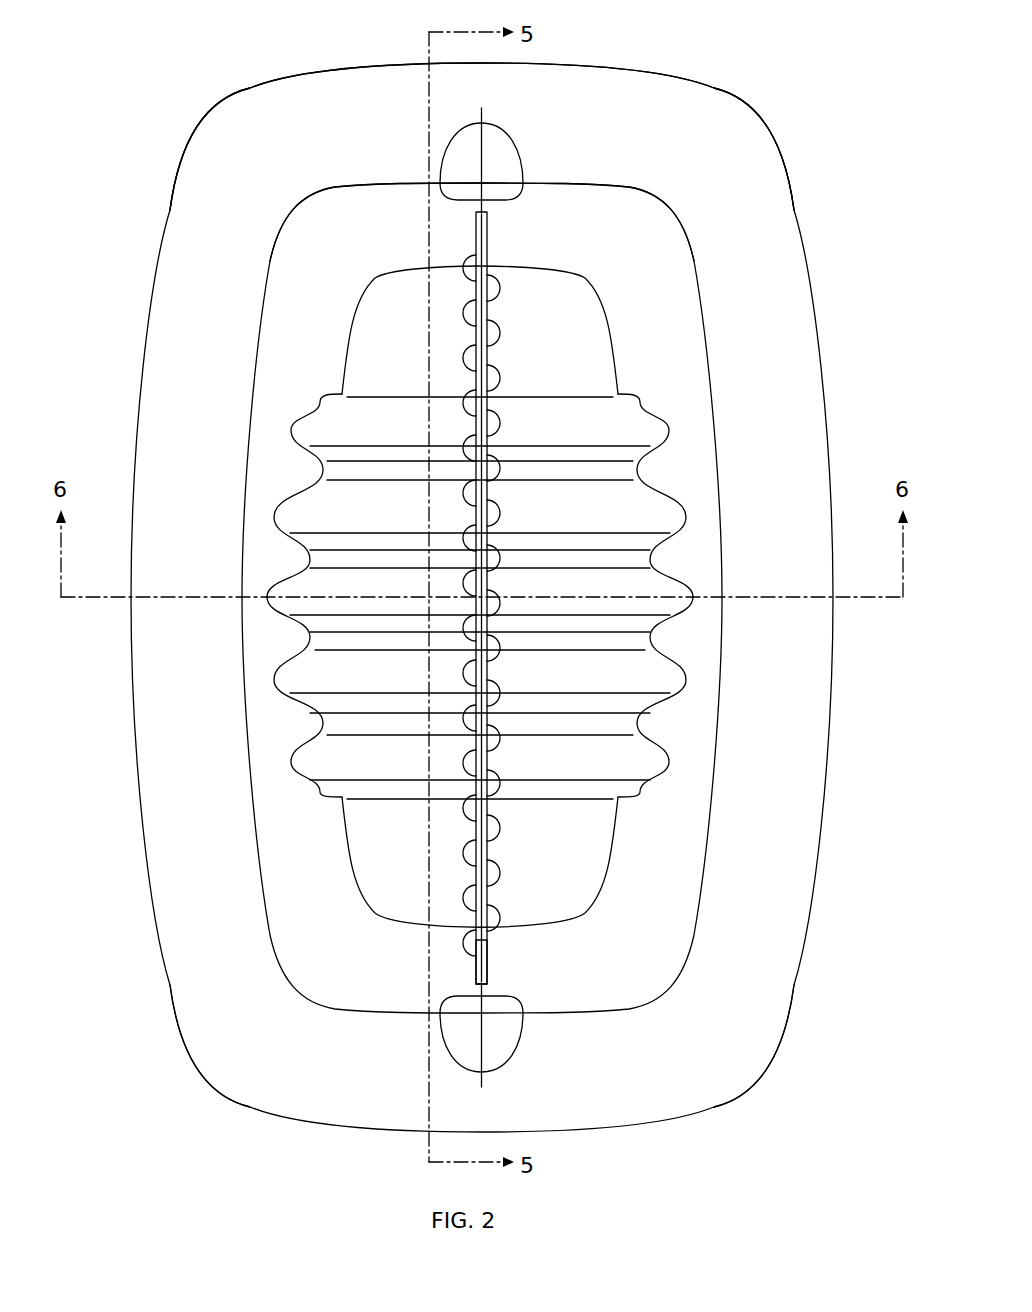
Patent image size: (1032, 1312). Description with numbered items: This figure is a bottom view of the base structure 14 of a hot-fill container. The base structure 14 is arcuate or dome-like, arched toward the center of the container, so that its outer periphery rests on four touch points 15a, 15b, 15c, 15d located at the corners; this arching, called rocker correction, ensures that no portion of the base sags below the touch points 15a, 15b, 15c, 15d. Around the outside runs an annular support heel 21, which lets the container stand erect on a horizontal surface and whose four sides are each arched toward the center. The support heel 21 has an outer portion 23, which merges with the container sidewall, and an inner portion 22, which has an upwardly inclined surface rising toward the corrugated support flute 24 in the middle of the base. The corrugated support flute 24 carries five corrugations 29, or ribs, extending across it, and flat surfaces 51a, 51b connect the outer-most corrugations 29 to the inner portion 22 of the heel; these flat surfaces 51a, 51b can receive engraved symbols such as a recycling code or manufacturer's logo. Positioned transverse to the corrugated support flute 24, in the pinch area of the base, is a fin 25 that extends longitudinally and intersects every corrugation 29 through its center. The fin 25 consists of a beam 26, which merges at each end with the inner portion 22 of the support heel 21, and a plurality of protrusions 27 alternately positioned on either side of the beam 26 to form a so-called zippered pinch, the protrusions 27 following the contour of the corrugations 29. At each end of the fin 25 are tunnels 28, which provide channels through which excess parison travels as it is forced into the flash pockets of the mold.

The base structure 14 is at (634, 60).
The touch point 15a is at (734, 1085).
The touch point 15b is at (738, 123).
The touch point 15c is at (223, 116).
The touch point 15d is at (230, 1085).
The annular support heel 21 is at (754, 297).
The inner portion 22 is at (698, 353).
The outer portion 23 is at (804, 381).
The corrugated support flute 24 is at (637, 703).
The fin 25 is at (494, 229).
The beam 26 is at (491, 957).
The protrusions 27 is at (494, 870).
The tunnels 28 is at (500, 142).
The corrugations 29 is at (678, 672).
The flat surface 51a is at (374, 315).
The flat surface 51b is at (371, 866).